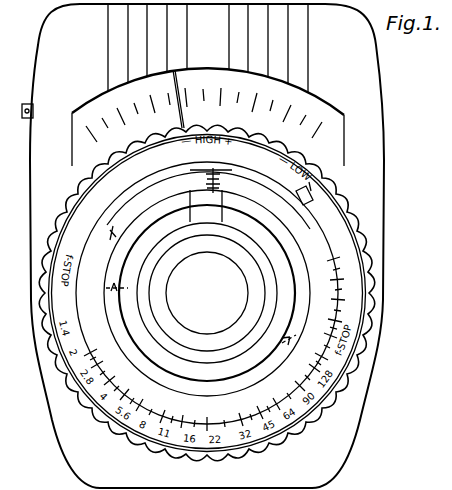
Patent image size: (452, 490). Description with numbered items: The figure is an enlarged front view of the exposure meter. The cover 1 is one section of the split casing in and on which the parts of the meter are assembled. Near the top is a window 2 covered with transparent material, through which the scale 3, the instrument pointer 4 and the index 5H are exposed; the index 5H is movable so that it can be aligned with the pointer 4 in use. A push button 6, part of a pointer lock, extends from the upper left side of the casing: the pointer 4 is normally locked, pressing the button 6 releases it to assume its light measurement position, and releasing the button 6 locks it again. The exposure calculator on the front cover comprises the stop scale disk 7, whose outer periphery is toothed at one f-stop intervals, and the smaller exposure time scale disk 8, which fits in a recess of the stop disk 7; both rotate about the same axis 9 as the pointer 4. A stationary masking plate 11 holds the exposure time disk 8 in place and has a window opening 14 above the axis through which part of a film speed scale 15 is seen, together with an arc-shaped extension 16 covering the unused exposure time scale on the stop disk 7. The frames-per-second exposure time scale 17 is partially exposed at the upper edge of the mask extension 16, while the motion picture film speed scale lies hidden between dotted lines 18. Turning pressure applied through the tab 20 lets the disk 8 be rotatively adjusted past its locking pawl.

The cover 1 is at (378, 110).
The window 2 is at (342, 135).
The scale 3 is at (304, 101).
The instrument pointer 4 is at (134, 85).
The index 5H is at (201, 90).
The push button 6 is at (25, 104).
The stop scale disk 7 is at (351, 294).
The exposure time scale disk 8 is at (334, 284).
The axis of rotation 9 is at (204, 301).
The masking plate 11 is at (113, 270).
The window opening 14 is at (190, 209).
The film speed scale 15 is at (222, 206).
The arc-shaped extension 16 is at (112, 236).
The exposure time scale in frames per second 17 is at (190, 171).
The dotted lines 18 is at (222, 384).
The tab 20 is at (311, 202).